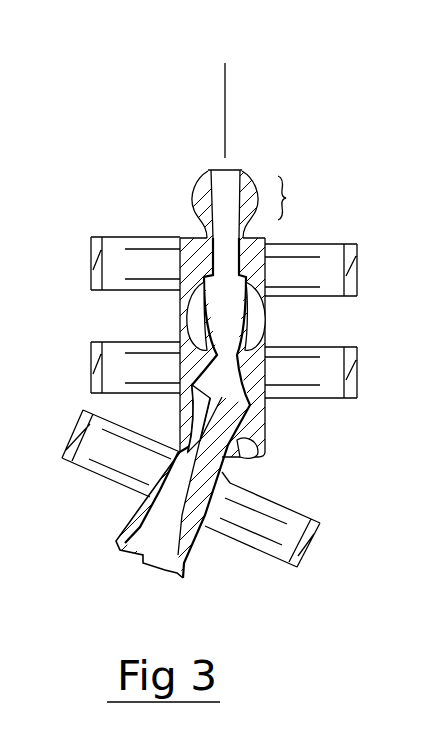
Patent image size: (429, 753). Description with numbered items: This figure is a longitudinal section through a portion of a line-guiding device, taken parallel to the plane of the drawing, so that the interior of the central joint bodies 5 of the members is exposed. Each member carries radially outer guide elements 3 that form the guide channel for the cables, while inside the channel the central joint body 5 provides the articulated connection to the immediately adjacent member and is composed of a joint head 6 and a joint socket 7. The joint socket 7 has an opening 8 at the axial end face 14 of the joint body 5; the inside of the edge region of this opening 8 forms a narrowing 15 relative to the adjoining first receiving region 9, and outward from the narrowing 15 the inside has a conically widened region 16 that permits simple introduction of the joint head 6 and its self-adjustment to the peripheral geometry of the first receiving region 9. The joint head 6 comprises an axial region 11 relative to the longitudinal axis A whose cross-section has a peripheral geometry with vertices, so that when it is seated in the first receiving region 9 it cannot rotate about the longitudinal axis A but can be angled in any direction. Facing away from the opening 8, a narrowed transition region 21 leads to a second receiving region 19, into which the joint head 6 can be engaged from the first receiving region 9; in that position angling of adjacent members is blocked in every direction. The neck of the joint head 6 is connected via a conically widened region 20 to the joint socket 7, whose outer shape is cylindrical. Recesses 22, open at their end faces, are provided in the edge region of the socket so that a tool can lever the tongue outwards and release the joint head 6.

The longitudinal axis A is at (223, 95).
The radially outer guide elements 3 is at (92, 250).
The central joint body 5 is at (180, 315).
The joint head 6 is at (243, 187).
The joint socket 7 is at (130, 510).
The opening 8 is at (140, 550).
The first receiving region 9 is at (158, 550).
The axial region 11 is at (302, 198).
The axial end face 14 is at (182, 580).
The narrowing 15 is at (190, 565).
The conically widened region 16 is at (118, 547).
The second receiving region 19 is at (218, 518).
The conically widened region 20 is at (193, 236).
The narrowed transition region 21 is at (180, 517).
The recesses 22 is at (148, 558).